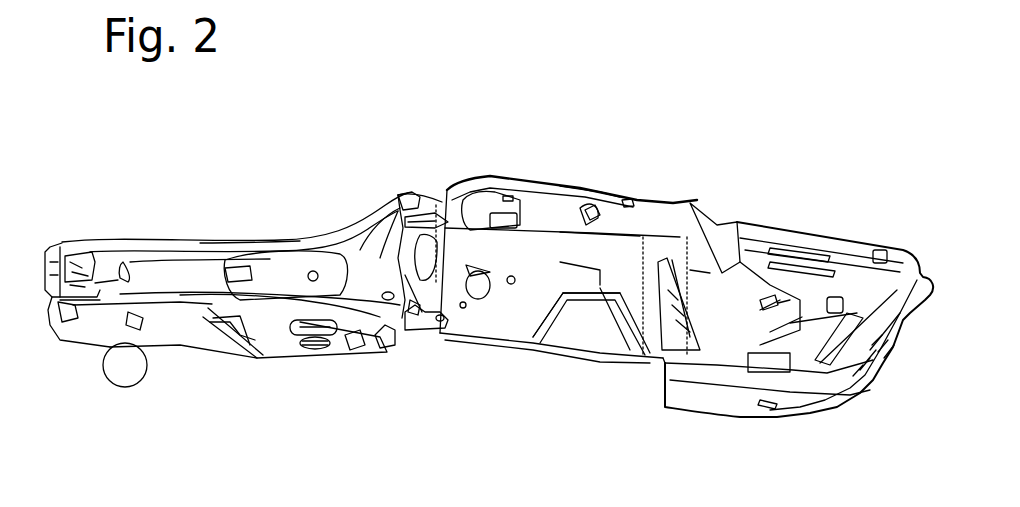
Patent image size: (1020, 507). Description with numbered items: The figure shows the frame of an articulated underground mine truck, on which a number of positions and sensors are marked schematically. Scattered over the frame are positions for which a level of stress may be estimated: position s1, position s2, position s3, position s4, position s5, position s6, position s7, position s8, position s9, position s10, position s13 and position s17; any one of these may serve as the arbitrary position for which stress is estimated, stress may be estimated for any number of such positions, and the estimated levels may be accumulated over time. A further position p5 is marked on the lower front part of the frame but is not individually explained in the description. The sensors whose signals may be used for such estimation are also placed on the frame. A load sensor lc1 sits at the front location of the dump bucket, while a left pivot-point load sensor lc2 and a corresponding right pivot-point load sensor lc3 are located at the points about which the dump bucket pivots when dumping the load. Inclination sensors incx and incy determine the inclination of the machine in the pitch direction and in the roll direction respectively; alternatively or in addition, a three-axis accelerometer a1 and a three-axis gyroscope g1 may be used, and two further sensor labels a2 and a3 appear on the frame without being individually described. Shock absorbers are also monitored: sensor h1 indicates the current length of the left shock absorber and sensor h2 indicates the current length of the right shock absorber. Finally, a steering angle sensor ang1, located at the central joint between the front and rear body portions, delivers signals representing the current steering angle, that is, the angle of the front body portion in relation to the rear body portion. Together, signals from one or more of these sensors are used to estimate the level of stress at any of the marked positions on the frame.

The load sensor at left pivot point lc2 is at (48, 251).
The position on the mine truck frame s10 is at (83, 262).
The aperture a2 is at (100, 277).
The lower connector lc3 is at (60, 305).
The plate p5 is at (263, 330).
The position on the mine truck frame s6 is at (300, 295).
The position on the mine truck frame s5 is at (292, 243).
The position on the mine truck frame s17 is at (387, 230).
The steering angle sensor ang1 is at (374, 248).
The load sensor at front location of the dump bucket lc1 is at (400, 194).
The aperture a3 is at (466, 183).
The position on the mine truck frame s8 is at (418, 304).
The position on the mine truck frame s7 is at (421, 287).
The position on the mine truck frame s13 is at (518, 221).
The left shock absorber length sensor h1 is at (587, 192).
The position on the mine truck frame s3 is at (628, 198).
The 3-axis gyroscope g1 is at (606, 215).
The 3-axis accelerometer a1 is at (663, 255).
The position on the mine truck frame s4 is at (586, 269).
The right shock absorber length sensor h2 is at (565, 298).
The position on the mine truck frame s1 is at (590, 311).
The position on the mine truck frame s2 is at (601, 319).
The position on the mine truck frame s9 is at (772, 273).
The inclination sensor for machine pitch direction incx is at (742, 297).
The inclination sensor for machine roll direction incy is at (779, 304).